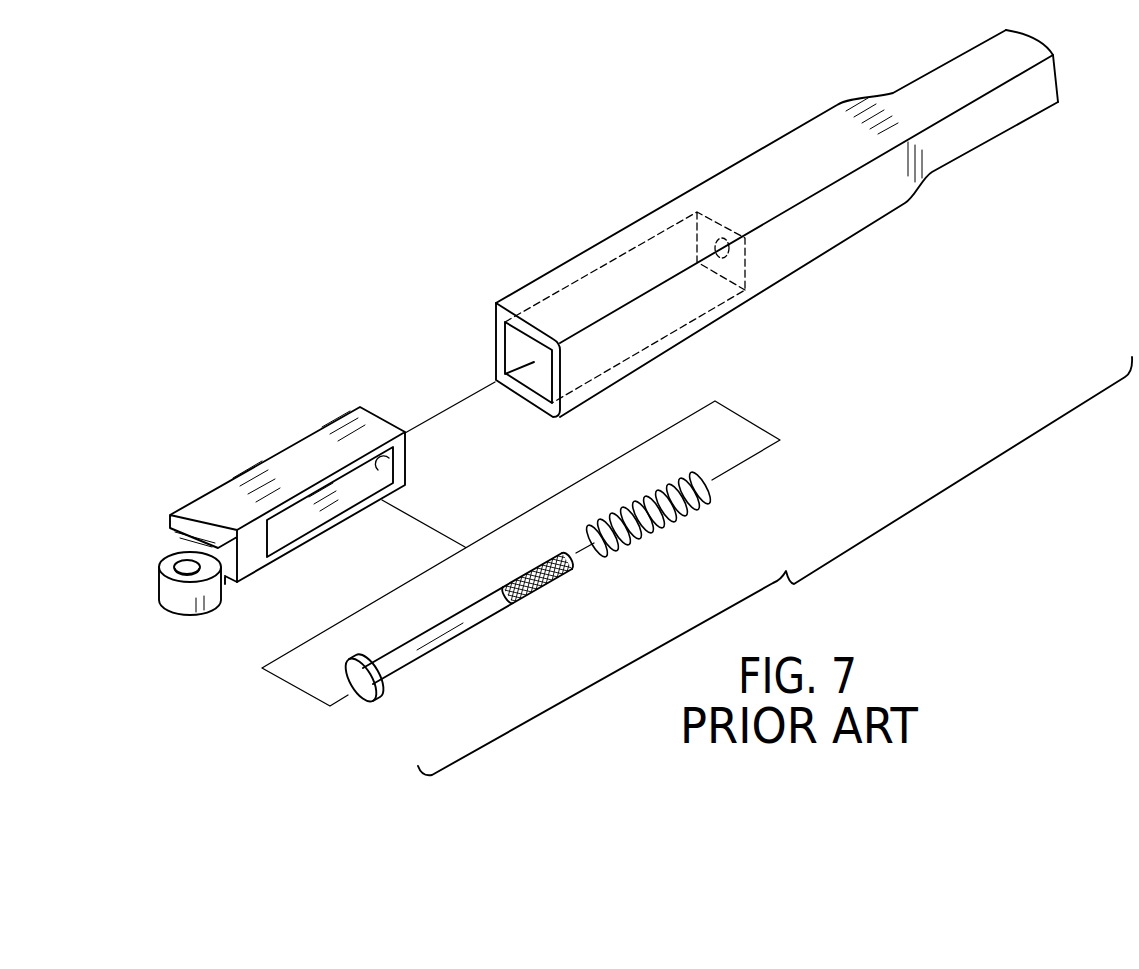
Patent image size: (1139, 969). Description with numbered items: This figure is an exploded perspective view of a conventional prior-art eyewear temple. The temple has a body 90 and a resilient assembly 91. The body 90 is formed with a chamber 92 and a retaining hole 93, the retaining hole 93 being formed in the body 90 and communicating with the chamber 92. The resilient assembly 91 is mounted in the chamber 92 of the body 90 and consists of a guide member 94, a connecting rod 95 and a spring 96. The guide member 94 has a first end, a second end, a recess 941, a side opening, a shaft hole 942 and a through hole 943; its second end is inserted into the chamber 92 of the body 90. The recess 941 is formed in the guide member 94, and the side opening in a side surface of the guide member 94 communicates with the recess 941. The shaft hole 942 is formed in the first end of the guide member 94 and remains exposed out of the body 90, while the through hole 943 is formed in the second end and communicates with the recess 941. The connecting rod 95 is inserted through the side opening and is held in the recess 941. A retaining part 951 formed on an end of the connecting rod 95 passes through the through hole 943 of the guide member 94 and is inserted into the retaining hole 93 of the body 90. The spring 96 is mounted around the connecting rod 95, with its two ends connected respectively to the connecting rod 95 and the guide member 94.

The body 90 is at (765, 168).
The resilient assembly 91 is at (272, 408).
The chamber 92 is at (603, 278).
The retaining hole 93 is at (728, 262).
The guide member 94 is at (248, 477).
The recess 941 is at (337, 500).
The shaft hole 942 is at (180, 562).
The through hole 943 is at (389, 468).
The connecting rod 95 is at (437, 645).
The retaining part 951 is at (540, 582).
The spring 96 is at (673, 520).